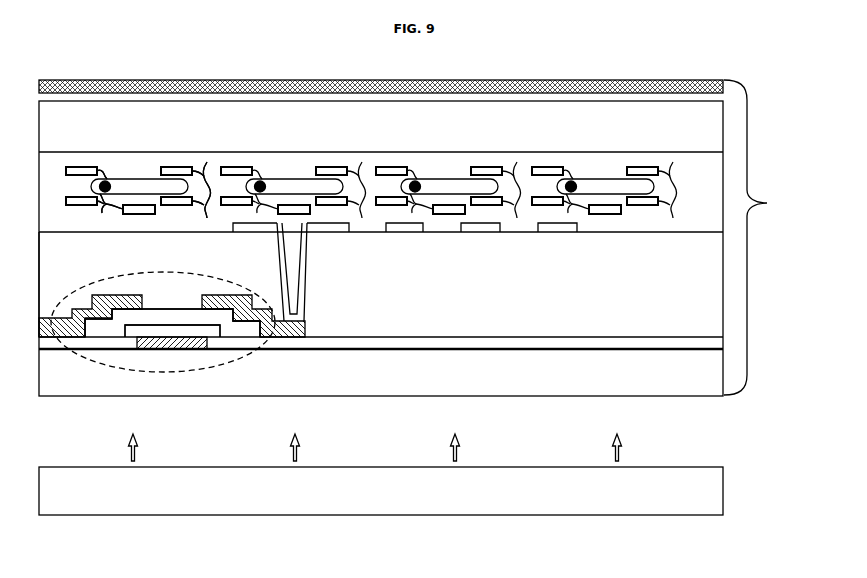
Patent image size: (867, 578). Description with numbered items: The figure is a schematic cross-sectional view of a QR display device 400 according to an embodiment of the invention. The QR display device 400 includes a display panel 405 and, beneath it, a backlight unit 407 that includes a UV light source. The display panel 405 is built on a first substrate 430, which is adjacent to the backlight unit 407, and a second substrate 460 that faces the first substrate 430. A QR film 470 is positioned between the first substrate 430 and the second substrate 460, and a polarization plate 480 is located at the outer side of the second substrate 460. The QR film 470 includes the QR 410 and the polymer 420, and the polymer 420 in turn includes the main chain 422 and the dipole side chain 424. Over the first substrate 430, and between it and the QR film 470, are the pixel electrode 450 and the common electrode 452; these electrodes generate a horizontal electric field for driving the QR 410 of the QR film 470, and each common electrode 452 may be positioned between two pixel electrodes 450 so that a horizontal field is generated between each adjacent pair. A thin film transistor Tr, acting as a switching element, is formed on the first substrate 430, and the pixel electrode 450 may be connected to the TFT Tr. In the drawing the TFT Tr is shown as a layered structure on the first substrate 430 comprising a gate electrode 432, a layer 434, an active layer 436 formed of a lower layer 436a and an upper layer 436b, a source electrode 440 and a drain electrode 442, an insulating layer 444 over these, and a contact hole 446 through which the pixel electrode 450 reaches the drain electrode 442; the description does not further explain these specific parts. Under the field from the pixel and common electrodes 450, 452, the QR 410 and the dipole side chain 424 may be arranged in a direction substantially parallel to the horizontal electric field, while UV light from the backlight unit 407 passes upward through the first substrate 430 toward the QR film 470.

The QR display device 400 is at (367, 62).
The display panel 405 is at (760, 237).
The backlight unit 407 is at (695, 502).
The QR 410 is at (143, 183).
The polymer 420 is at (81, 124).
The main chain 422 is at (103, 167).
The dipole side chain 424 is at (80, 166).
The first substrate 430 is at (695, 392).
The gate electrode 432 is at (170, 348).
The buffer layer 434 is at (371, 343).
The active layer 436 is at (208, 400).
The gate insulating layer 436a is at (227, 332).
The semiconductor layer 436b is at (257, 320).
The source electrode 440 is at (121, 295).
The drain electrode 442 is at (232, 297).
The insulating layer 444 is at (430, 329).
The contact hole 446 is at (290, 277).
The pixel electrode 450 is at (330, 232).
The common electrode 452 is at (397, 232).
The second substrate 460 is at (698, 134).
The QR film 470 is at (698, 199).
The polarization plate 480 is at (663, 80).
The thin film transistor Tr is at (123, 368).